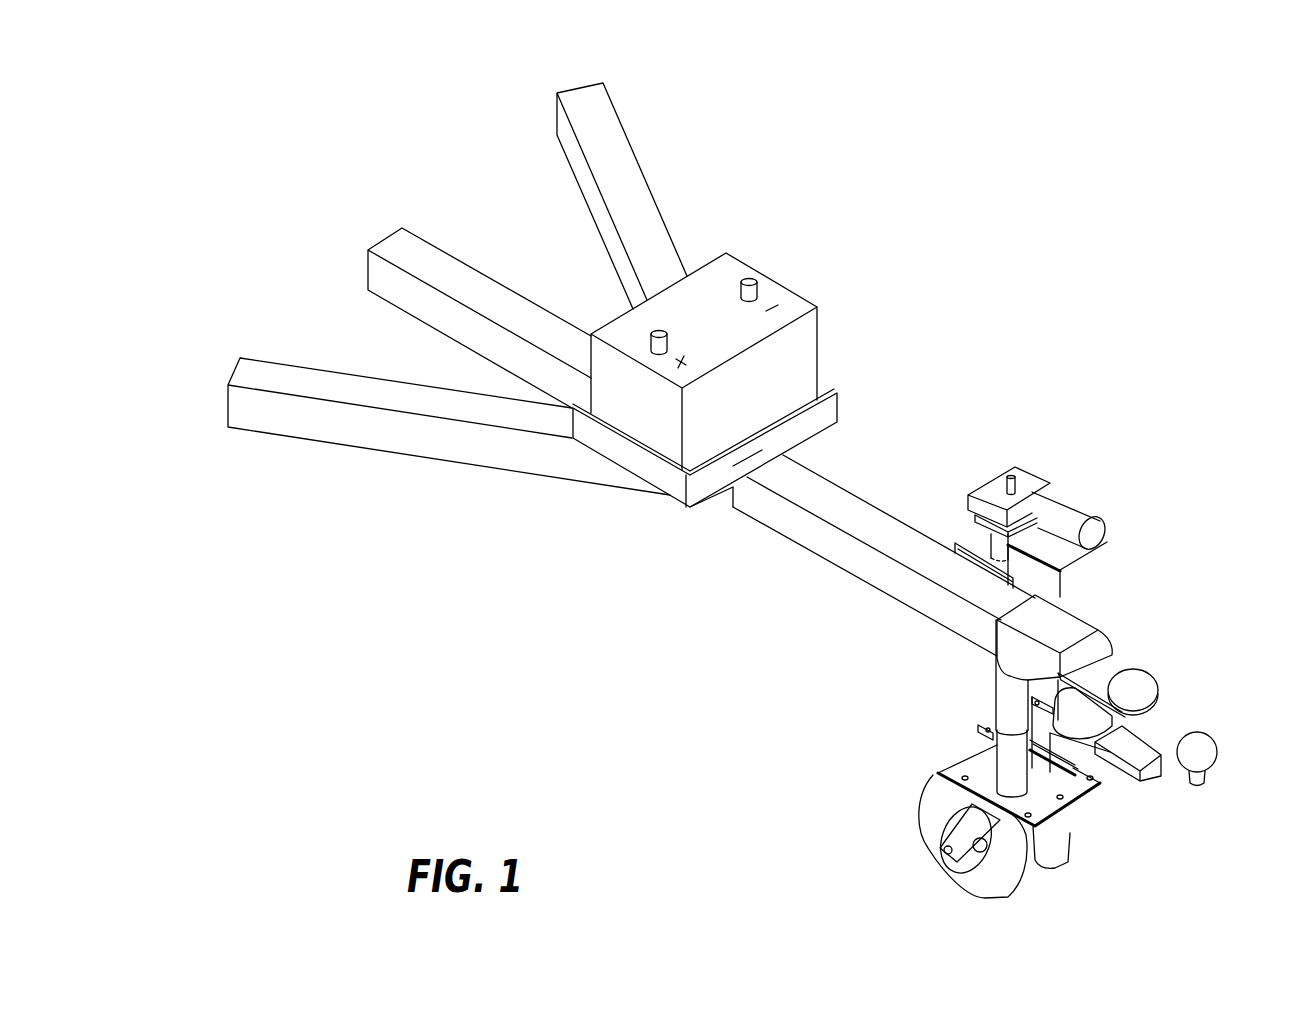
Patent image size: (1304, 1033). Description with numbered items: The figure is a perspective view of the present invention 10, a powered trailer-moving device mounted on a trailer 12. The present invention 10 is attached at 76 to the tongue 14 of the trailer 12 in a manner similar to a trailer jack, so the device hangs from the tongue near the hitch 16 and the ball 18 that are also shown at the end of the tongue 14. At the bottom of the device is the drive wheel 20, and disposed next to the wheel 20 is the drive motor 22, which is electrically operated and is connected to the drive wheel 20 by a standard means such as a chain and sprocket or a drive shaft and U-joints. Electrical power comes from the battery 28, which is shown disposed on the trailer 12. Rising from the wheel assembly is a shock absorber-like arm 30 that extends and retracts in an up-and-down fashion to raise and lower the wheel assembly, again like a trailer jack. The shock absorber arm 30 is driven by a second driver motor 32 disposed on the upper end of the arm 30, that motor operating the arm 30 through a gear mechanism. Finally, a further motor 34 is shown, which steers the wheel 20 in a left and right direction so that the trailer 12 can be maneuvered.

The present invention 10 is at (1072, 417).
The trailer 12 is at (631, 188).
The tongue 14 is at (889, 538).
The hitch 16 is at (1142, 673).
The ball 18 is at (1206, 742).
The drive wheel 20 is at (930, 837).
The drive motor 22 is at (1100, 808).
The battery 28 is at (792, 300).
The shock absorber-like arm 30 is at (1003, 682).
The second driver motor 32 is at (1082, 505).
The motor 34 is at (1160, 727).
The attachment point 76 is at (956, 549).